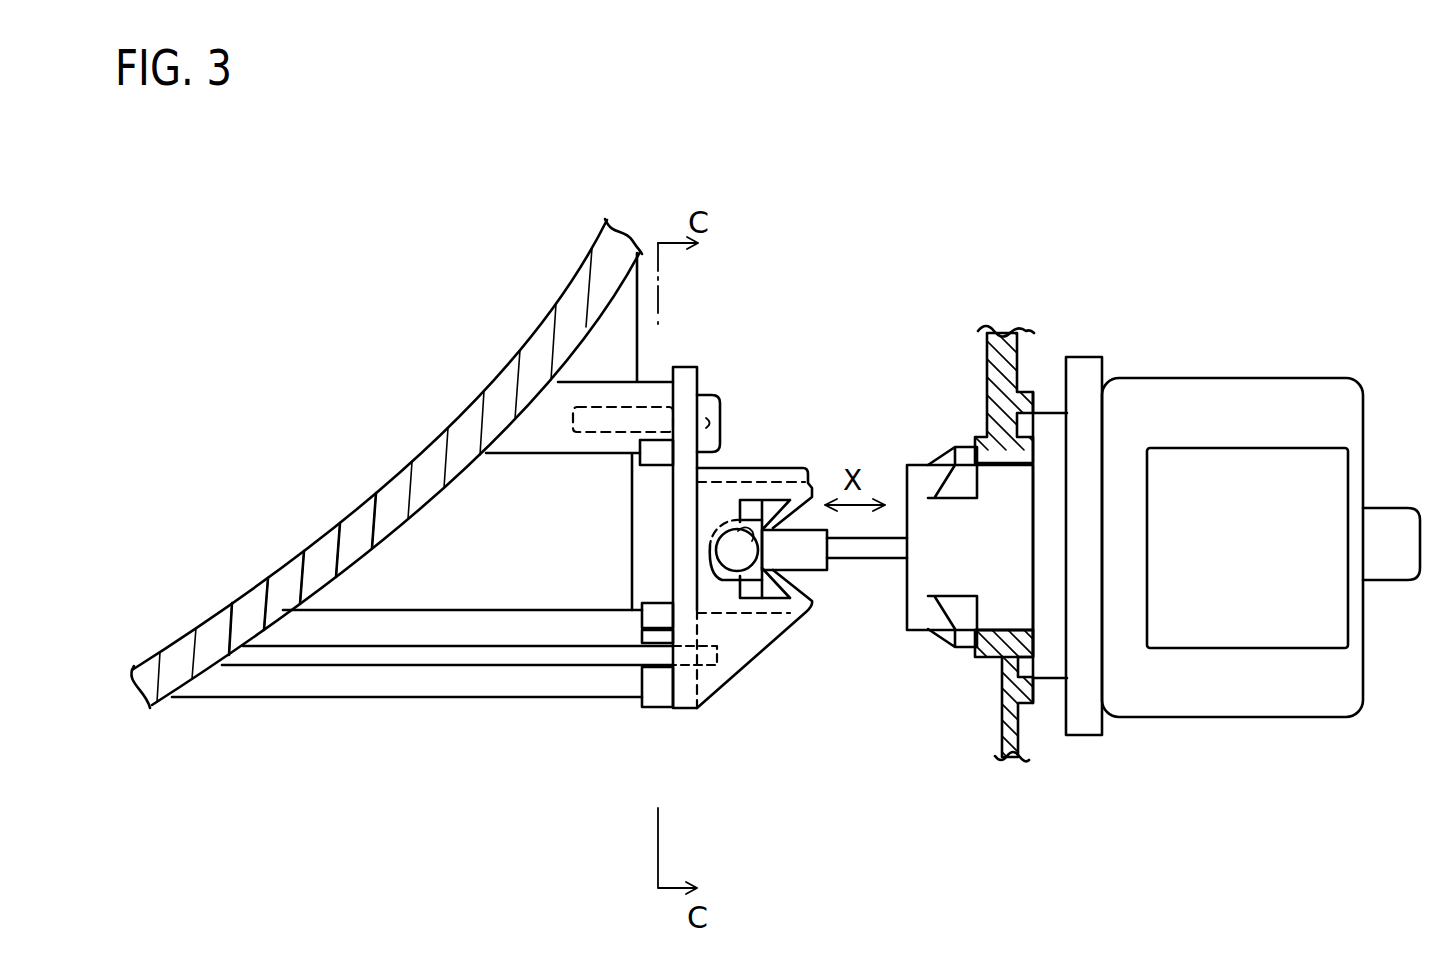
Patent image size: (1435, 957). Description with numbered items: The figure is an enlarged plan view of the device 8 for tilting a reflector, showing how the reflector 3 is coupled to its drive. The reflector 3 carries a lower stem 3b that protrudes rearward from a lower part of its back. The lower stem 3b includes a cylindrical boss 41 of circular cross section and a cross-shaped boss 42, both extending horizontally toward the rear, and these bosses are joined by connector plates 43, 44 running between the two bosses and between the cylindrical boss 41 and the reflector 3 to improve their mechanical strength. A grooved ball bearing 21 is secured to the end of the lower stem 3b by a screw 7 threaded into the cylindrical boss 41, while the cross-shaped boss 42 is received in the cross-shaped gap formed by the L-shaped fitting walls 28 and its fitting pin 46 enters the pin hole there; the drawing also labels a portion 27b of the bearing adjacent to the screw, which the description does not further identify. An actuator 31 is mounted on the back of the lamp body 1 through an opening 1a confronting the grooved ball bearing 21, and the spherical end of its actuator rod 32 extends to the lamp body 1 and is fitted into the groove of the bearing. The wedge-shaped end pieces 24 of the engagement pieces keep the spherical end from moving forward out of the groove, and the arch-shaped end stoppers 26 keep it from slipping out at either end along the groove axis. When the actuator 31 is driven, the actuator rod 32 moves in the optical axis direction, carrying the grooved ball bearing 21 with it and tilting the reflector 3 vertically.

The lamp body 1 is at (1010, 358).
The opening 1a is at (993, 630).
The reflector 3 is at (470, 407).
The lower stem 3b is at (462, 700).
The screw 7 is at (717, 405).
The device for tilting a reflector 8 is at (1005, 216).
The grooved ball bearing 21 is at (757, 461).
The end piece 24 is at (793, 588).
The end stopper 26 is at (767, 473).
The mounting plate 27b is at (668, 352).
The L-shaped fitting wall 28 is at (662, 690).
The actuator 31 is at (1227, 356).
The actuator rod 32 is at (890, 556).
The cylindrical boss 41 is at (552, 413).
The cross-shaped boss 42 is at (565, 682).
The connector plate 43 is at (375, 567).
The connector plate 44 is at (617, 320).
The fitting pin 46 is at (717, 667).